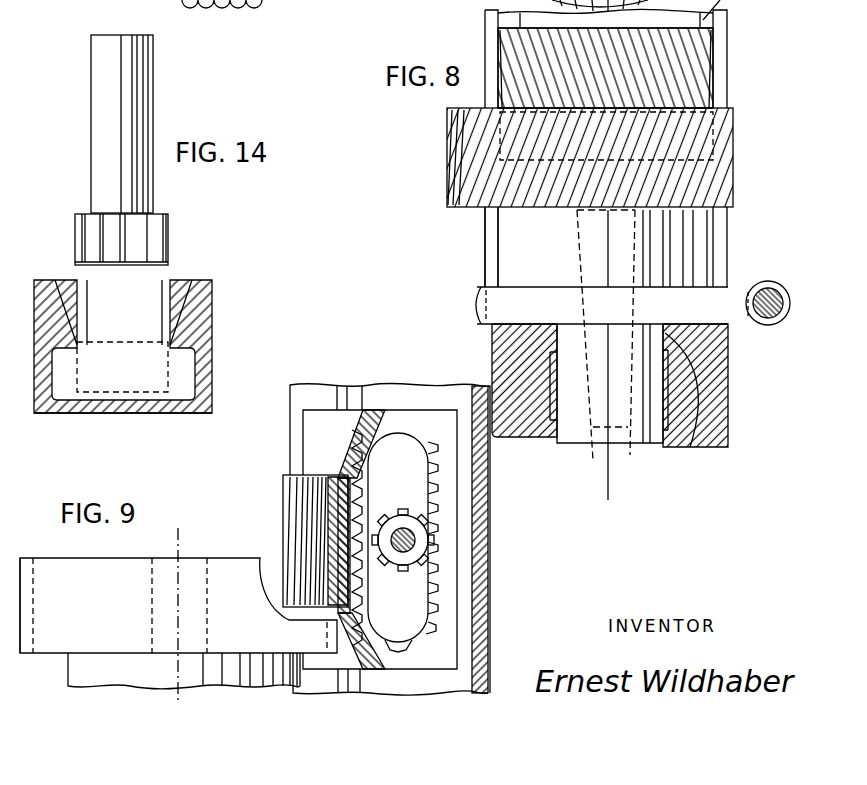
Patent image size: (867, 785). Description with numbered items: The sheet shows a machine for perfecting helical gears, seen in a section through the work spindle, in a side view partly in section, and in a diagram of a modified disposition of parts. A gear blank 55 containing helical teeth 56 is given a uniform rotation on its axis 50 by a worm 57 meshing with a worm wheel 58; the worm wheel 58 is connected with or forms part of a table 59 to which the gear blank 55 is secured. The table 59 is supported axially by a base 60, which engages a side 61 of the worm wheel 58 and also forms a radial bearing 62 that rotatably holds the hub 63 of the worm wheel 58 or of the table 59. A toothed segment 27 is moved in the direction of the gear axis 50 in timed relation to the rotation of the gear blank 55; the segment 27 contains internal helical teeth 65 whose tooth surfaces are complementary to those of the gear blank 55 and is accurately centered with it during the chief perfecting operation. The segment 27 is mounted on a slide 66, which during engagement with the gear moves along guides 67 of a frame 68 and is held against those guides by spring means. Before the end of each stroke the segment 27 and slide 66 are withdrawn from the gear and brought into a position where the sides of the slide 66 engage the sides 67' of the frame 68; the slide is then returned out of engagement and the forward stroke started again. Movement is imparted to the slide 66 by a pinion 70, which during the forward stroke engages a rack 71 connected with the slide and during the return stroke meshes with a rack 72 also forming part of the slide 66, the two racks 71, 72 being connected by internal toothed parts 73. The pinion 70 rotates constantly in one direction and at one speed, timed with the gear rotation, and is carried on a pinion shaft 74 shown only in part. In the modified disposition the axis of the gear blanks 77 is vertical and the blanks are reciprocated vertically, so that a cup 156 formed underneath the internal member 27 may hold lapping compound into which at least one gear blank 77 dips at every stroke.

In FIG. 8, the toothed segment 27 is at (700, 78).
In FIG. 14, the toothed segment 27 is at (182, 308).
In FIG. 9, the toothed segment 27 is at (287, 485).
In FIG. 8, the gear axis 50 is at (612, 470).
In FIG. 9, the gear axis 50 is at (180, 540).
In FIG. 8, the gear blank 55 is at (470, 178).
In FIG. 9, the gear blank 55 is at (65, 640).
In FIG. 8, the helical teeth 56 is at (473, 127).
In FIG. 9, the helical teeth 56 is at (27, 570).
In FIG. 8, the worm 57 is at (773, 335).
In FIG. 8, the worm wheel 58 is at (483, 307).
In FIG. 8, the table 59 is at (510, 241).
In FIG. 9, the table 59 is at (122, 668).
In FIG. 8, the base 60 is at (512, 355).
In FIG. 8, the side of worm wheel 61 is at (523, 322).
In FIG. 8, the radial bearing 62 is at (693, 447).
In FIG. 8, the hub 63 is at (574, 432).
In FIG. 8, the internal helical teeth 65 is at (713, 42).
In FIG. 9, the internal helical teeth 65 is at (307, 527).
In FIG. 9, the slide 66 is at (367, 412).
In FIG. 9, the guides 67 is at (344, 534).
In FIG. 9, the sides of frame 67' is at (337, 378).
In FIG. 8, the frame 68 is at (492, 33).
In FIG. 9, the frame 68 is at (480, 552).
In FIG. 9, the pinion 70 is at (403, 518).
In FIG. 9, the rack 71 is at (440, 592).
In FIG. 9, the rack 72 is at (355, 598).
In FIG. 9, the internal toothed parts 73 is at (402, 432).
In FIG. 9, the pinion shaft 74 is at (402, 556).
In FIG. 14, the gear blanks 77 is at (152, 239).
In FIG. 14, the cup 156 is at (98, 405).